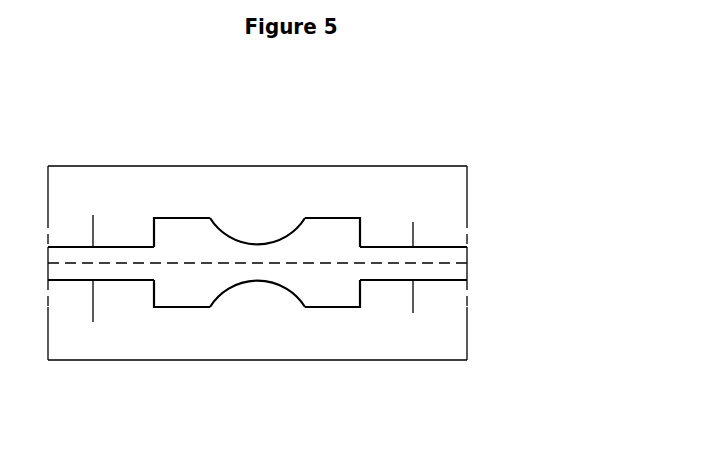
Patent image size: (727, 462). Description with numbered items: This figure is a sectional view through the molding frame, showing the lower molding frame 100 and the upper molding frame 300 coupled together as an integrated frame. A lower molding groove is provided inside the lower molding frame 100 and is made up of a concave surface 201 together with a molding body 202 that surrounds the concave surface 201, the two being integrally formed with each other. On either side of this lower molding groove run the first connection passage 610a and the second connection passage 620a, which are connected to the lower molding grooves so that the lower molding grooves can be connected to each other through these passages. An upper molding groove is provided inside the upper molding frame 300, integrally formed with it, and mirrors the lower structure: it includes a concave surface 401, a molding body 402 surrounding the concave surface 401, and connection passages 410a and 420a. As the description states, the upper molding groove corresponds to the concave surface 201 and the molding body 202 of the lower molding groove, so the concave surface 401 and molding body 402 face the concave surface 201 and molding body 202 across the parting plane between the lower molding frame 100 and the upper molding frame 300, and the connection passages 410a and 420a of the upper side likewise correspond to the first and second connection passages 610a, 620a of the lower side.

The lower molding frame 100 is at (452, 325).
The upper molding frame 300 is at (452, 208).
The concave surface 401 is at (267, 243).
The molding body 402 is at (185, 218).
The connection passage 410a is at (93, 215).
The connection passage 420a is at (413, 222).
The concave surface 201 is at (260, 333).
The molding body 202 is at (185, 307).
The first connection passage 610a is at (93, 322).
The second connection passage 620a is at (413, 313).